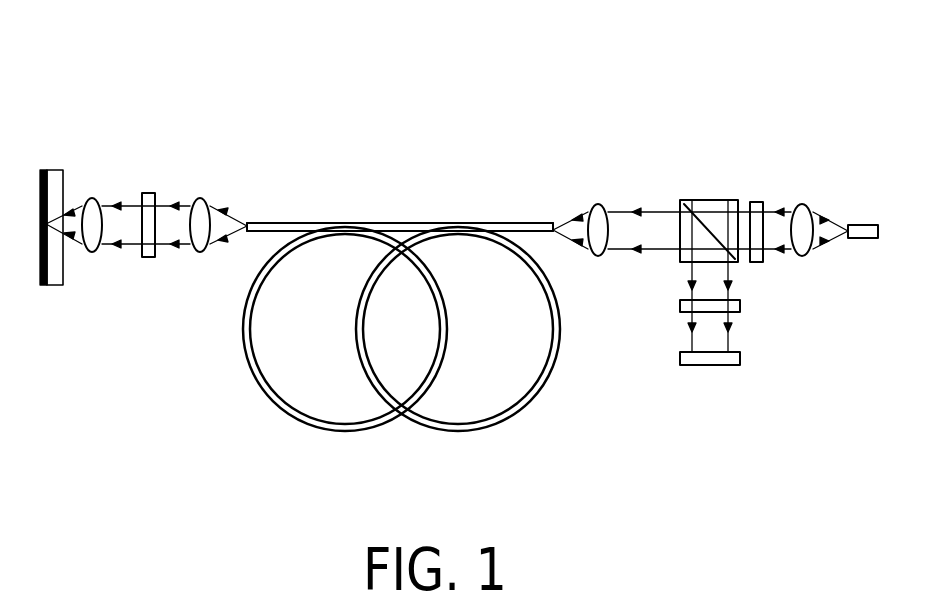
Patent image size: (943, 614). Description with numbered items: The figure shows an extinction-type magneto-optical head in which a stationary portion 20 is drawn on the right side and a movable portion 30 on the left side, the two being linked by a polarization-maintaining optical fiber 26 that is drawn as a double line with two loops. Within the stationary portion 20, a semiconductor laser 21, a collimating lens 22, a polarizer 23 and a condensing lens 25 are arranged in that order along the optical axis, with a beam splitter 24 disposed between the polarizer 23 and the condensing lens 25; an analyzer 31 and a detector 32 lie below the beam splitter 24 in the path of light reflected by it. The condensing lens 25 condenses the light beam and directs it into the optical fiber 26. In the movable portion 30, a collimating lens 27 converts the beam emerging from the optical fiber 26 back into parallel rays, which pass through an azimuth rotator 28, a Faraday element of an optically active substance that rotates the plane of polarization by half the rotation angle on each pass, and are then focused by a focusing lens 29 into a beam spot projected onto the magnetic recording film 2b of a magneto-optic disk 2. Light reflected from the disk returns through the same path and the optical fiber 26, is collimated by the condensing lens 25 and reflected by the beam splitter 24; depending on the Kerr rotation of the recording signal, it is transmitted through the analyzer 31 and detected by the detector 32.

The magneto-optic disk 2 is at (46, 226).
The magnetic recording film 2b is at (44, 170).
The stationary portion 20 is at (877, 87).
The semiconductor laser 21 is at (865, 225).
The collimating lens 22 is at (797, 204).
The polarizer 23 is at (759, 201).
The beam splitter 24 is at (697, 200).
The condensing lens 25 is at (593, 204).
The polarization-maintaining optical fiber 26 is at (450, 432).
The collimating lens 27 is at (204, 197).
The azimuth rotator 28 is at (148, 193).
The focusing lens 29 is at (96, 198).
The movable portion 30 is at (247, 80).
The analyzer 31 is at (680, 306).
The detector 32 is at (740, 358).